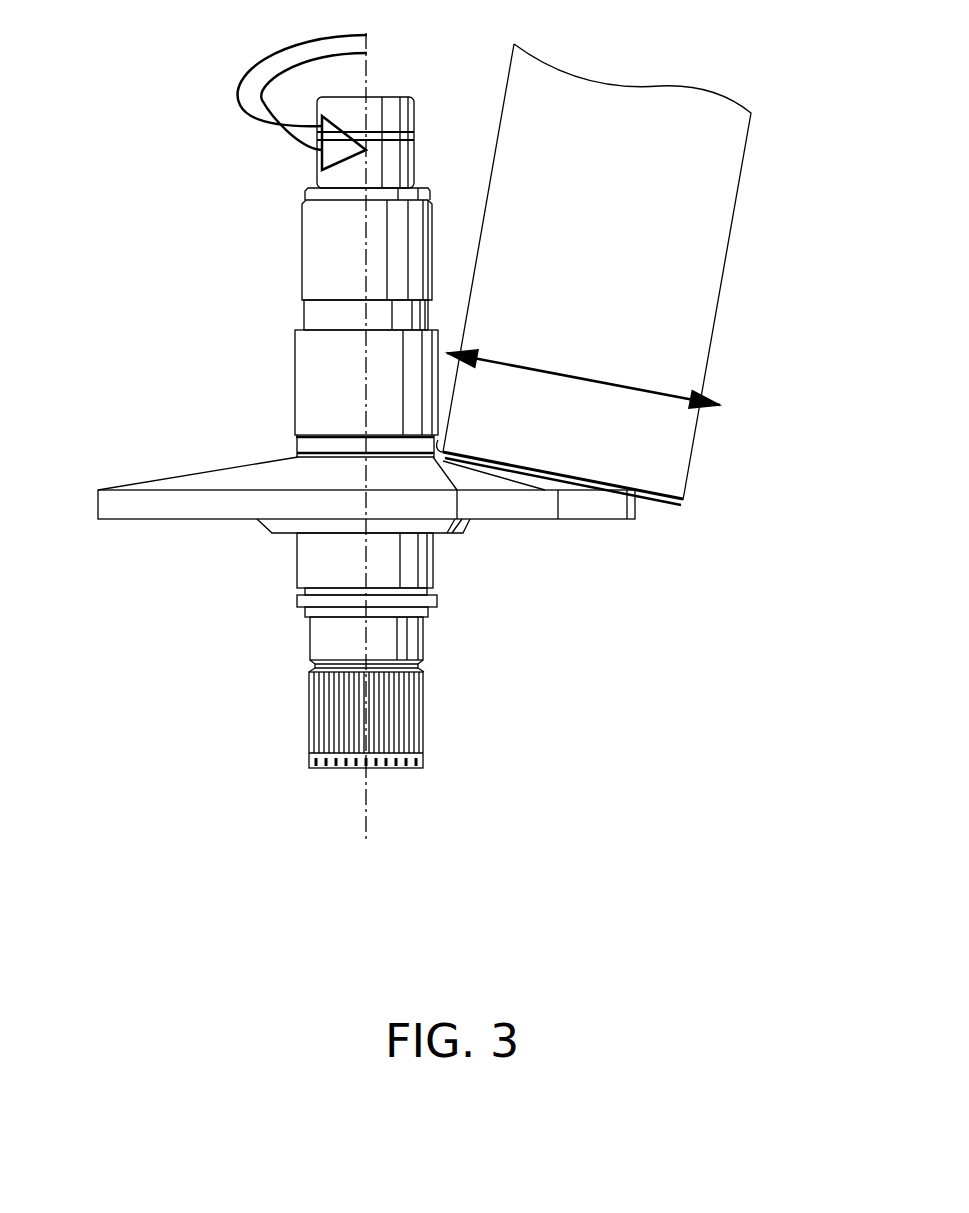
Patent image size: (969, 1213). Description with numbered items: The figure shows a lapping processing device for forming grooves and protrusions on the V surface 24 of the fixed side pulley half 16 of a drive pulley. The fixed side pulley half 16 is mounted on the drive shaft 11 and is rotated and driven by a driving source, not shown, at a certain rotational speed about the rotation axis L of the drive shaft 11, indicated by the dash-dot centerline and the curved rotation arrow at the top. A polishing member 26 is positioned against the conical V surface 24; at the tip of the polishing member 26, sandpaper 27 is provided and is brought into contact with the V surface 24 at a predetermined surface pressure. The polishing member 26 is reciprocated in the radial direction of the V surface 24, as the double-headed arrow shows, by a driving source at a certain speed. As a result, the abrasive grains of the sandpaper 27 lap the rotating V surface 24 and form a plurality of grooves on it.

The drive shaft 11 is at (342, 395).
The fixed side pulley half 16 is at (200, 543).
The V surface 24 is at (216, 467).
The polishing member 26 is at (713, 262).
The sandpaper 27 is at (540, 475).
The rotation axis L is at (365, 238).